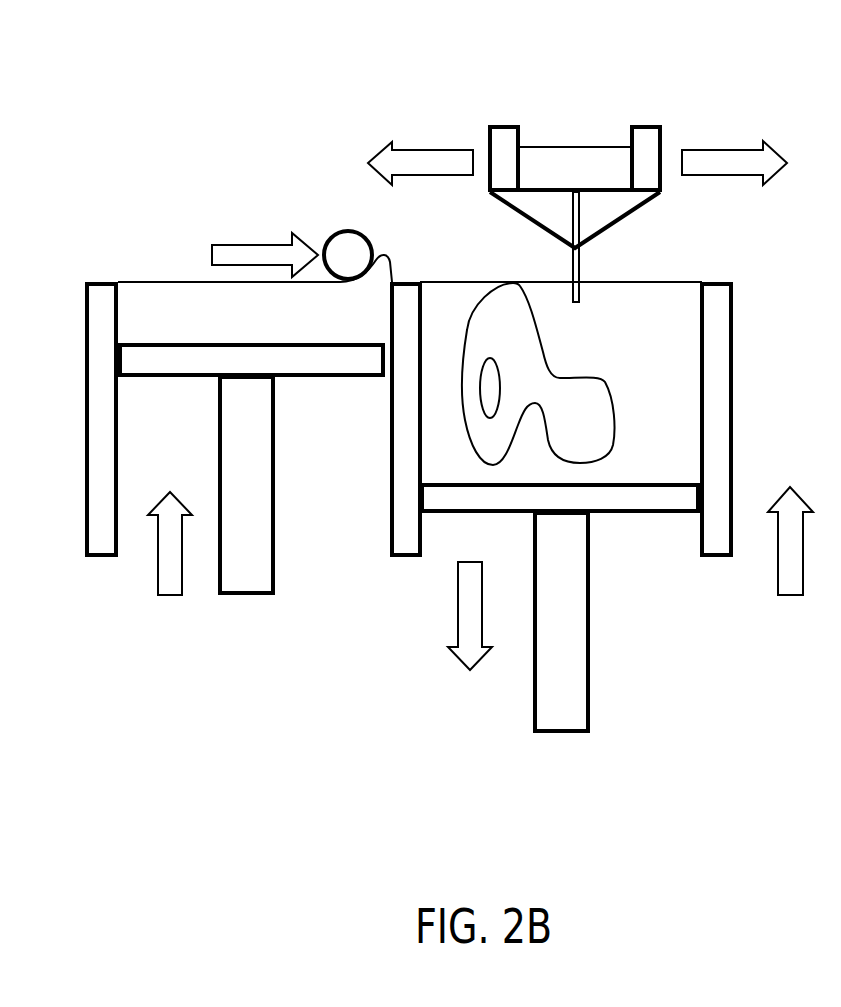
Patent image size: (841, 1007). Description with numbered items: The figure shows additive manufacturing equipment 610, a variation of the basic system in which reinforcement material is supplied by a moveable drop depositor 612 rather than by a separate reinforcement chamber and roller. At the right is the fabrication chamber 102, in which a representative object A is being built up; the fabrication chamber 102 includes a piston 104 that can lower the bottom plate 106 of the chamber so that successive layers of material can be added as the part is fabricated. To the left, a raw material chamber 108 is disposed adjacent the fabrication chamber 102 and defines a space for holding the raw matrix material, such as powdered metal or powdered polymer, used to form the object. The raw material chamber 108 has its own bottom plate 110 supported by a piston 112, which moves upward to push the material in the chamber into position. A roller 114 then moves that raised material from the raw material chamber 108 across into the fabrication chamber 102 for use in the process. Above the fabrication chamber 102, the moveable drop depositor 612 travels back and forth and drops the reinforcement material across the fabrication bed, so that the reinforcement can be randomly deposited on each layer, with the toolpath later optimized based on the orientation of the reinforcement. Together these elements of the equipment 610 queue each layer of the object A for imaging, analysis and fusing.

The equipment 610 is at (238, 93).
The moveable drop depositor 612 is at (669, 109).
The fabrication chamber 102 is at (677, 269).
The piston 104 is at (533, 698).
The bottom plate 106 is at (639, 519).
The raw material chamber 108 is at (158, 290).
The bottom plate 110 is at (323, 379).
The piston 112 is at (247, 382).
The roller 114 is at (315, 230).
The representative object A is at (495, 333).